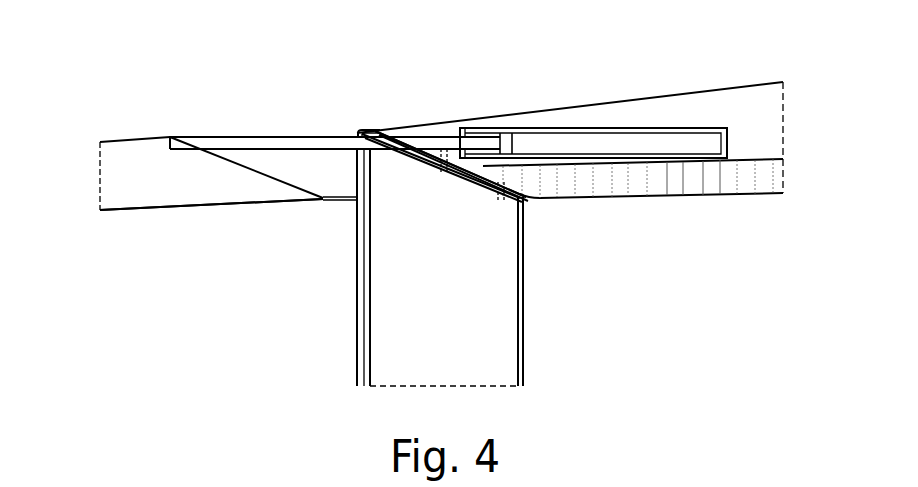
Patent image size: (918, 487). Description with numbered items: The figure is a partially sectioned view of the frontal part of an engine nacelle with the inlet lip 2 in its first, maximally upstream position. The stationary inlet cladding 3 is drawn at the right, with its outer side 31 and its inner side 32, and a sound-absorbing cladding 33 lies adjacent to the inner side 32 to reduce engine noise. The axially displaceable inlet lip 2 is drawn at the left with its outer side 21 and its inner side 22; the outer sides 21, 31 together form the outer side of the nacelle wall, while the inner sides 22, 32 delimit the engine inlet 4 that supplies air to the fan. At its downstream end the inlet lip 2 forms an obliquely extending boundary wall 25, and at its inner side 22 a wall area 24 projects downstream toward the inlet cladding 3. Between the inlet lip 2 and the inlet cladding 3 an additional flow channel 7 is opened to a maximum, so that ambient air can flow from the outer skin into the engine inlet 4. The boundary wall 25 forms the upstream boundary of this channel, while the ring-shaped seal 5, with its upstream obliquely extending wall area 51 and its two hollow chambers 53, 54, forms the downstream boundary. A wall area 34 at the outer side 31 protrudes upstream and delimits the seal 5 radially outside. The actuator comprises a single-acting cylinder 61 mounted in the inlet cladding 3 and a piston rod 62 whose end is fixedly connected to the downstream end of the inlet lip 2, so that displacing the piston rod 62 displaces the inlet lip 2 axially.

The inlet lip 2 is at (102, 141).
The outer side of the inlet lip 21 is at (168, 136).
The inner side of the inlet lip 22 is at (178, 211).
The wall area 24 is at (342, 201).
The obliquely extending boundary wall 25 is at (270, 172).
The piston rod 62 is at (288, 136).
The additional flow channel 7 is at (340, 165).
The inlet cladding 3 is at (510, 112).
The outer side of the inlet cladding 31 is at (597, 102).
The single-acting cylinder 61 is at (687, 127).
The inner side of the inlet cladding 32 is at (630, 199).
The sound-absorbing cladding 33 is at (738, 183).
The wall area 34 is at (383, 128).
The upstream obliquely extending wall area 51 is at (453, 176).
The radially outer hollow chamber 53 is at (432, 162).
The radially inner hollow chamber 54 is at (498, 196).
The ring-shaped seal 5 is at (507, 313).
The engine inlet 4 is at (659, 357).